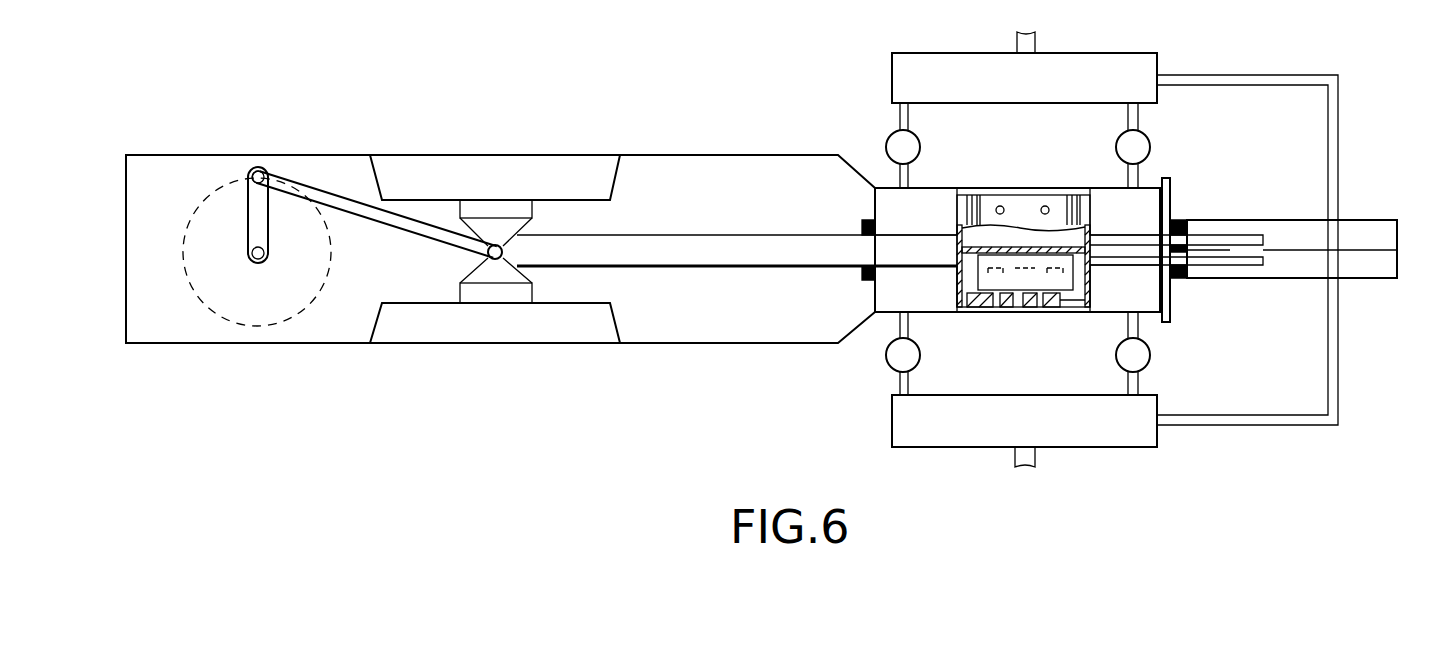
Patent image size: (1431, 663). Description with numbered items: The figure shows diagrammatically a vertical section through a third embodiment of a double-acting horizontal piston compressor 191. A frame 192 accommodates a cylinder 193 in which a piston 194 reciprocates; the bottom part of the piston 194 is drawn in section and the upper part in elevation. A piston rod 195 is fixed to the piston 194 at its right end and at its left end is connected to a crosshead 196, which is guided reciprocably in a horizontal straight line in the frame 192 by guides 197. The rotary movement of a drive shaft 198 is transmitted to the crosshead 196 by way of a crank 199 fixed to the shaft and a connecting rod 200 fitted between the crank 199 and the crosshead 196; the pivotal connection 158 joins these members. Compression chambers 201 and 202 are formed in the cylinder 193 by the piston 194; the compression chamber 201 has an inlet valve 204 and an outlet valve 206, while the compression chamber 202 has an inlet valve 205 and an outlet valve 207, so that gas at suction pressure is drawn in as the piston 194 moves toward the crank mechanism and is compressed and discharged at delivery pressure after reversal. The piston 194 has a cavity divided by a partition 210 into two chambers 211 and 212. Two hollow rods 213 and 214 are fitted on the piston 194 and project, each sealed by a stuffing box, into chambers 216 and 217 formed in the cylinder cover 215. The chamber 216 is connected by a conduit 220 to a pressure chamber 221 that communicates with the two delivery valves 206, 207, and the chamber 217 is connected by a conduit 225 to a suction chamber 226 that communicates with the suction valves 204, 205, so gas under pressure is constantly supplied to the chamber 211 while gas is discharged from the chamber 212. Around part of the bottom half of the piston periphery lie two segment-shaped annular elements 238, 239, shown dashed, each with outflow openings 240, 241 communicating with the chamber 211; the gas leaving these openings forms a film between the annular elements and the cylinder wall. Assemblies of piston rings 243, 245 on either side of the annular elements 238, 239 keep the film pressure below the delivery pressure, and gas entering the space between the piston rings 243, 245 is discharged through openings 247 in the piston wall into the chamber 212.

The ball joint 158 is at (487, 257).
The horizontal piston compressor 191 is at (792, 100).
The frame 192 is at (707, 155).
The cylinder 193 is at (880, 313).
The piston 194 is at (972, 278).
The piston rod 195 is at (773, 246).
The crosshead 196 is at (480, 205).
The guides 197 is at (582, 177).
The drive shaft 198 is at (257, 262).
The crank 199 is at (240, 212).
The connecting rod 200 is at (337, 190).
The compression chamber 201 is at (1155, 227).
The compression chamber 202 is at (938, 227).
The inlet valve 204 is at (1150, 146).
The inlet valve 205 is at (886, 146).
The outlet valve 206 is at (1150, 354).
The outlet valve 207 is at (886, 353).
The partition 210 is at (990, 240).
The chamber 211 is at (1053, 258).
The chamber 212 is at (975, 238).
The hollow rod 213 is at (1257, 268).
The hollow rod 214 is at (1243, 240).
The cylinder cover 215 is at (1170, 300).
The chamber 216 is at (1370, 278).
The chamber 217 is at (1373, 228).
The conduit 220 is at (1335, 363).
The pressure chamber 221 is at (927, 432).
The conduit 225 is at (1342, 124).
The suction chamber 226 is at (942, 65).
The segment-shaped annular element 238 is at (1073, 317).
The segment-shaped annular element 239 is at (965, 318).
The outflow opening 240 is at (998, 315).
The outflow opening 241 is at (1033, 317).
The piston rings 243 is at (967, 195).
The piston rings 245 is at (1090, 188).
The openings 247 is at (1003, 206).